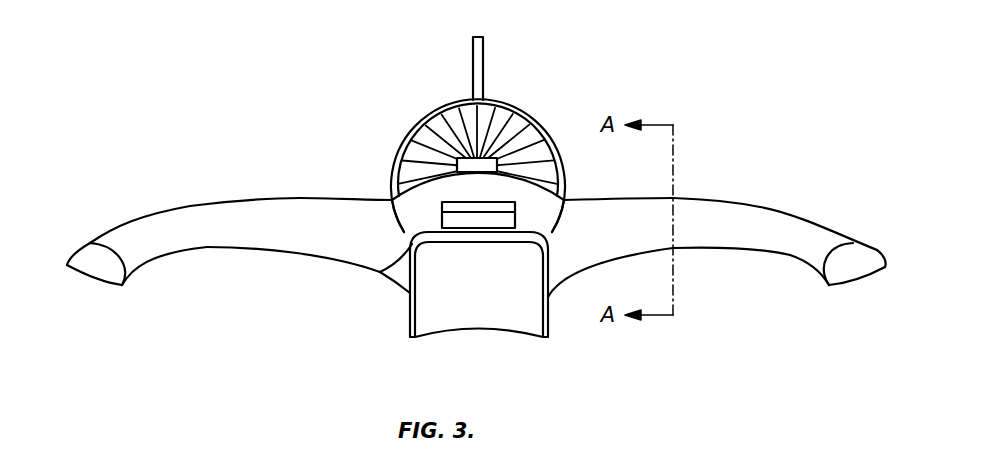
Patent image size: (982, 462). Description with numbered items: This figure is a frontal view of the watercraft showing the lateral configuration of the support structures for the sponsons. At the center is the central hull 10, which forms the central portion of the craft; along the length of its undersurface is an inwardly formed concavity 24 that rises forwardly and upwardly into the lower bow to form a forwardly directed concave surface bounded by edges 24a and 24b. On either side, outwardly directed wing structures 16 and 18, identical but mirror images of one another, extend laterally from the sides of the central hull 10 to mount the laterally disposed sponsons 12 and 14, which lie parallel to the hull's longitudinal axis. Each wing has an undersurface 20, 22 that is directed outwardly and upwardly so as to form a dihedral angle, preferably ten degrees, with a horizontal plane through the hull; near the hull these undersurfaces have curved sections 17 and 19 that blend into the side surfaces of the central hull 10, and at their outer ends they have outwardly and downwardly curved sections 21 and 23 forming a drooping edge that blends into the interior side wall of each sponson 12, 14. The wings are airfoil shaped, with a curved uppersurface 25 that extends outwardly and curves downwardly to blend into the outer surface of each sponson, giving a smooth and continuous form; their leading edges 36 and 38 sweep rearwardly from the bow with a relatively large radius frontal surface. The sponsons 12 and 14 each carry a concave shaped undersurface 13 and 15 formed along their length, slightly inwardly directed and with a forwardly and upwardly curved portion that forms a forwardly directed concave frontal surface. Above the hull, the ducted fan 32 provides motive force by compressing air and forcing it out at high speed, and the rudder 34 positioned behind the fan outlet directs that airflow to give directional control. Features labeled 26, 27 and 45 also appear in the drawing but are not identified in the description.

The central hull 10 is at (548, 312).
The sponson 12 is at (883, 248).
The concave shaped undersurface 13 is at (855, 266).
The sponson 14 is at (67, 260).
The concave shaped undersurface 15 is at (93, 268).
The wing structure 16 is at (722, 213).
The curved section 17 is at (577, 272).
The wing structure 18 is at (215, 215).
The curved section 19 is at (397, 283).
The undersurface 20 is at (725, 238).
The outwardly and downwardly curved section 21 is at (812, 273).
The undersurface 22 is at (250, 238).
The outwardly and downwardly curved section 23 is at (128, 276).
The concavity 24 is at (487, 301).
The edge 24a is at (541, 308).
The edge 24b is at (417, 308).
The curved uppersurface 25 is at (783, 210).
The wing-fuselage junction 26 is at (382, 275).
The left wing leading edge 27 is at (150, 213).
The ducted fan 32 is at (526, 110).
The rudder 34 is at (484, 50).
The leading edge 36 is at (620, 213).
The leading edge 38 is at (322, 232).
The weight block 45 is at (517, 221).